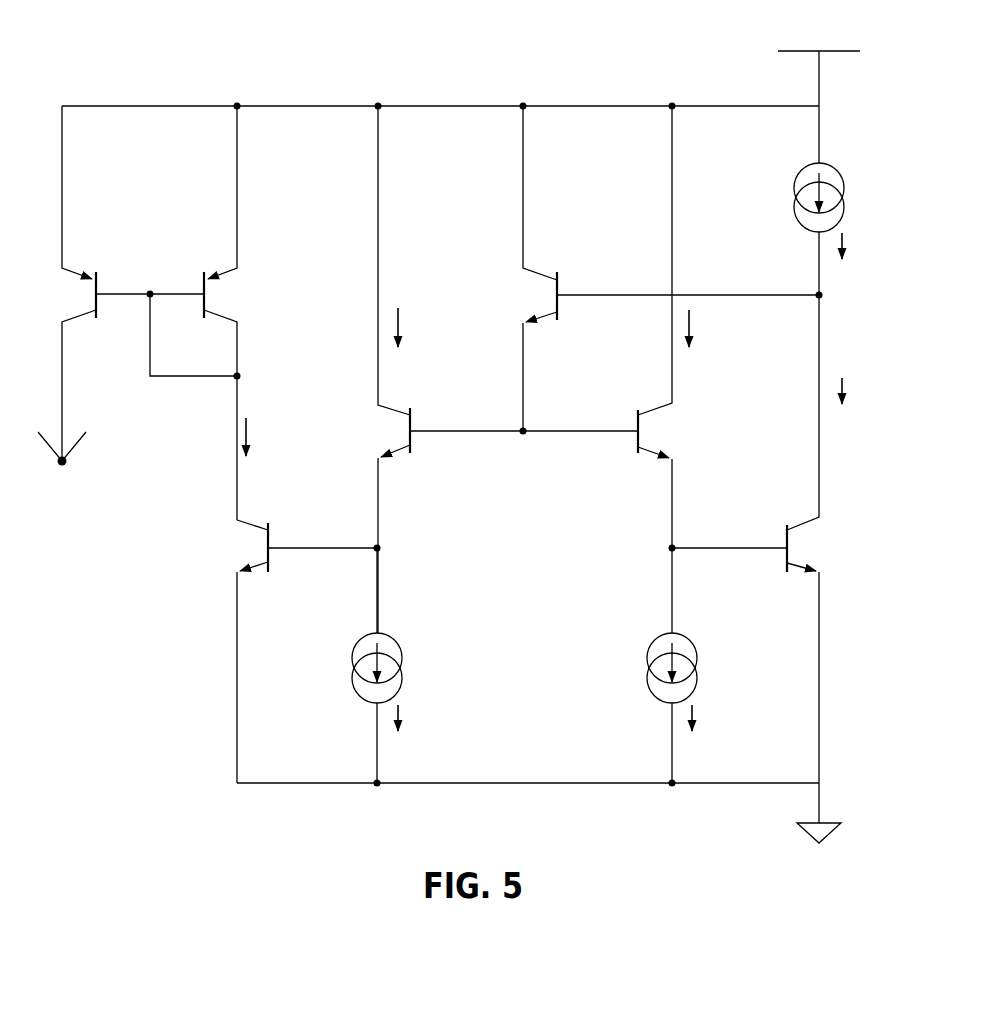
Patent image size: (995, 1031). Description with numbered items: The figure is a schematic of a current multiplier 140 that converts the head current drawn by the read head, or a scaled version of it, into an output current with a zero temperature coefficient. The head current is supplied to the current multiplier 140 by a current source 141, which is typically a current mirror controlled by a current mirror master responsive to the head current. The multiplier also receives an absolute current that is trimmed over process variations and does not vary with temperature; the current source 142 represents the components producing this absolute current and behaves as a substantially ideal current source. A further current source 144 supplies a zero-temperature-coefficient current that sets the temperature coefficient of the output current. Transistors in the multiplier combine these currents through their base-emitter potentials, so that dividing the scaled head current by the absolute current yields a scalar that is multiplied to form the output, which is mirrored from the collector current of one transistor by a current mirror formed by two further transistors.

The current multiplier 140 is at (357, 58).
The current source 141 is at (795, 184).
The current source 142 is at (353, 654).
The current source 144 is at (648, 654).